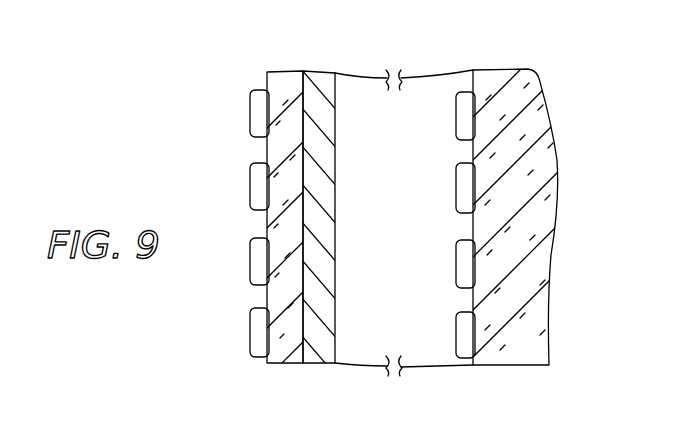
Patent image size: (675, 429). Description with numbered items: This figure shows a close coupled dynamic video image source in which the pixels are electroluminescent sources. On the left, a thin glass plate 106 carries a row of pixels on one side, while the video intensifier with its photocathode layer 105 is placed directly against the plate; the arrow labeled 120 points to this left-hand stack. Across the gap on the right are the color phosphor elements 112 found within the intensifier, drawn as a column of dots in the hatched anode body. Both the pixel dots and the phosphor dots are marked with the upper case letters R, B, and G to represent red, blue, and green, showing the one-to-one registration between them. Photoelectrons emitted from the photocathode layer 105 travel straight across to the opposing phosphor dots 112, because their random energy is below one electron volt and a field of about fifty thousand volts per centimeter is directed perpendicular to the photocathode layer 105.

The display panel assembly 120 is at (213, 162).
The photocathode layer 105 is at (316, 78).
The thin glass plate 106 is at (292, 353).
The color phosphor elements 112 is at (412, 109).
The red R is at (257, 108).
The blue B is at (257, 177).
The green G is at (260, 258).